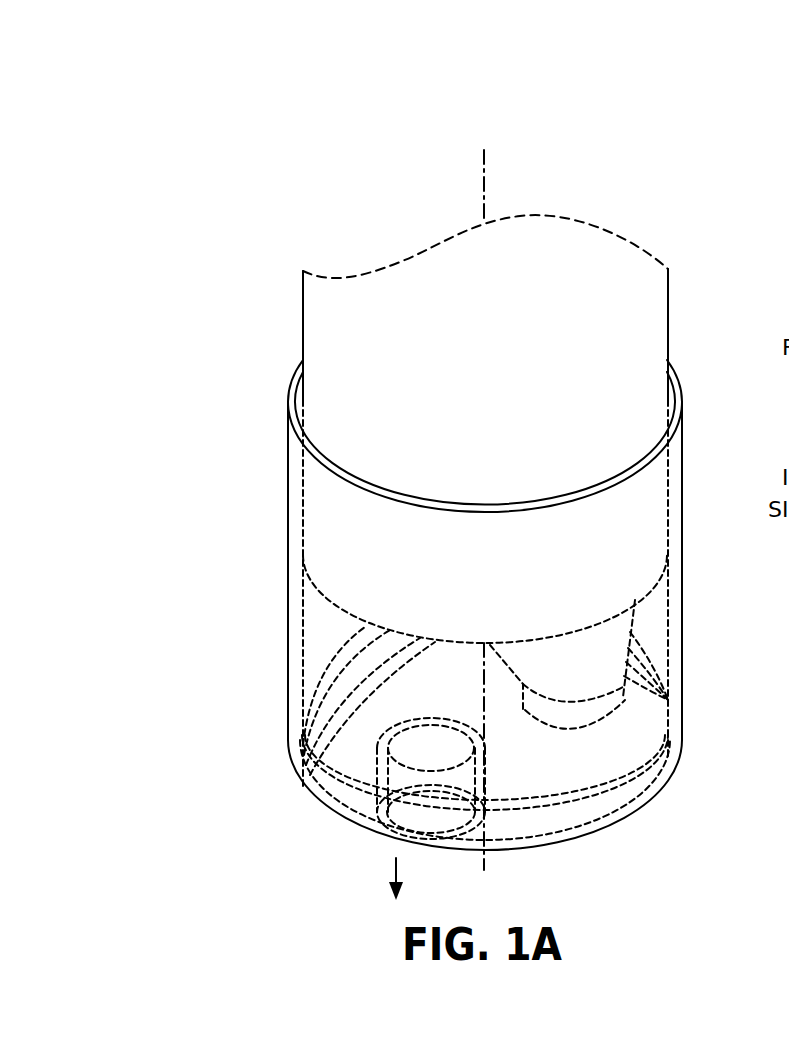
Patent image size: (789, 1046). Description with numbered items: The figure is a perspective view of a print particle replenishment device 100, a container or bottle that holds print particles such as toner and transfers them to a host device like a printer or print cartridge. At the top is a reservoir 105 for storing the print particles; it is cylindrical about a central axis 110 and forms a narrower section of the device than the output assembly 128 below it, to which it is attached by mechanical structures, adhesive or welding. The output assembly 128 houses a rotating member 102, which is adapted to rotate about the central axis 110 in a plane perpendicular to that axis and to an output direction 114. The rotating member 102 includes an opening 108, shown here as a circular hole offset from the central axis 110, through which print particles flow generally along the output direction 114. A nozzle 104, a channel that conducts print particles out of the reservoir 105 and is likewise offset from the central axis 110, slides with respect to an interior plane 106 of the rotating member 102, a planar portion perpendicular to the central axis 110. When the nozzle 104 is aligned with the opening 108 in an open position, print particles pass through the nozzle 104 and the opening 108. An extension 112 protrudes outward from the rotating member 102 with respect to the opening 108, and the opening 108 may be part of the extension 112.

The print particle replenishment device 100 is at (288, 165).
The rotating member 102 is at (573, 788).
The nozzle 104 is at (625, 695).
The reservoir 105 is at (303, 333).
The interior plane 106 is at (546, 752).
The opening 108 is at (378, 750).
The central axis 110 is at (485, 685).
The extension 112 is at (380, 803).
The output direction 114 is at (392, 877).
The output assembly 128 is at (288, 497).